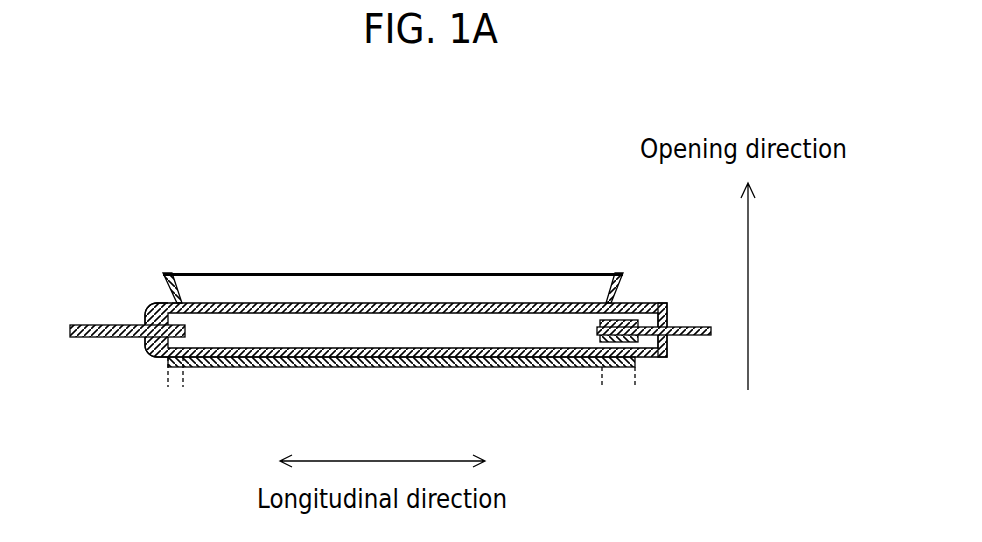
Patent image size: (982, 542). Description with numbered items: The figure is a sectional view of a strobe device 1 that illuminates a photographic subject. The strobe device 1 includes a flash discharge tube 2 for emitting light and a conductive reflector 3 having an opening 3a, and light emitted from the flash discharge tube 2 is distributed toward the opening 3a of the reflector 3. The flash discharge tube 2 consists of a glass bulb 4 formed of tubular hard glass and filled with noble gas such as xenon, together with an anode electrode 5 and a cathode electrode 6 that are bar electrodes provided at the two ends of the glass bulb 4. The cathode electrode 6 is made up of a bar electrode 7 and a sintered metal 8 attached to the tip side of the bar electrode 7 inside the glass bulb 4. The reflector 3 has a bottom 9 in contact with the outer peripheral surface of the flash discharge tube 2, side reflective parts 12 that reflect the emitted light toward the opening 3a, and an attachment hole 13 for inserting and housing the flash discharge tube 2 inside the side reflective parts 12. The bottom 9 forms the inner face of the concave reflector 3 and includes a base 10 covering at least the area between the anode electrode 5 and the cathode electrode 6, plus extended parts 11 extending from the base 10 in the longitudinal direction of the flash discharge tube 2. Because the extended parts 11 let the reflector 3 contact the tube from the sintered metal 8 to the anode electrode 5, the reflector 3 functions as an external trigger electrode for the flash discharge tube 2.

The strobe device 1 is at (169, 176).
The flash discharge tube 2 is at (406, 293).
The reflector 3 is at (393, 245).
The opening 3a is at (447, 273).
The glass bulb 4 is at (667, 350).
The anode electrode 5 is at (102, 327).
The cathode electrode 6 is at (668, 271).
The bar electrode 7 is at (662, 247).
The sintered metal 8 is at (634, 320).
The bottom 9 is at (153, 357).
The base 10 is at (418, 360).
The extended parts 11 is at (178, 357).
The side reflective parts 12 is at (178, 300).
The attachment hole 13 is at (173, 305).